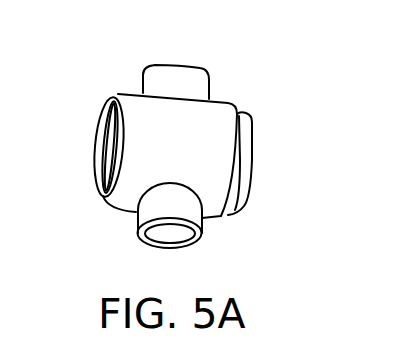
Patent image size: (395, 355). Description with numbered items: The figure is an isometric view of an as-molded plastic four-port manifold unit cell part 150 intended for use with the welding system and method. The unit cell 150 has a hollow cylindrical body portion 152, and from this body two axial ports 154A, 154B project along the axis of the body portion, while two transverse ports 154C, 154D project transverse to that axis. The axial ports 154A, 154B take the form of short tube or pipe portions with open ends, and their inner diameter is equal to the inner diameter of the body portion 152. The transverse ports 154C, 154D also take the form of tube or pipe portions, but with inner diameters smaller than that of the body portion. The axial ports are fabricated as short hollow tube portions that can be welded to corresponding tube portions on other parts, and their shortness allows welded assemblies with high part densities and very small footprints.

The unit cell part 150 is at (221, 88).
The hollow cylindrical body portion 152 is at (145, 125).
The axial port 154A is at (108, 132).
The axial port 154B is at (252, 162).
The transverse port 154C is at (182, 66).
The transverse port 154D is at (137, 233).